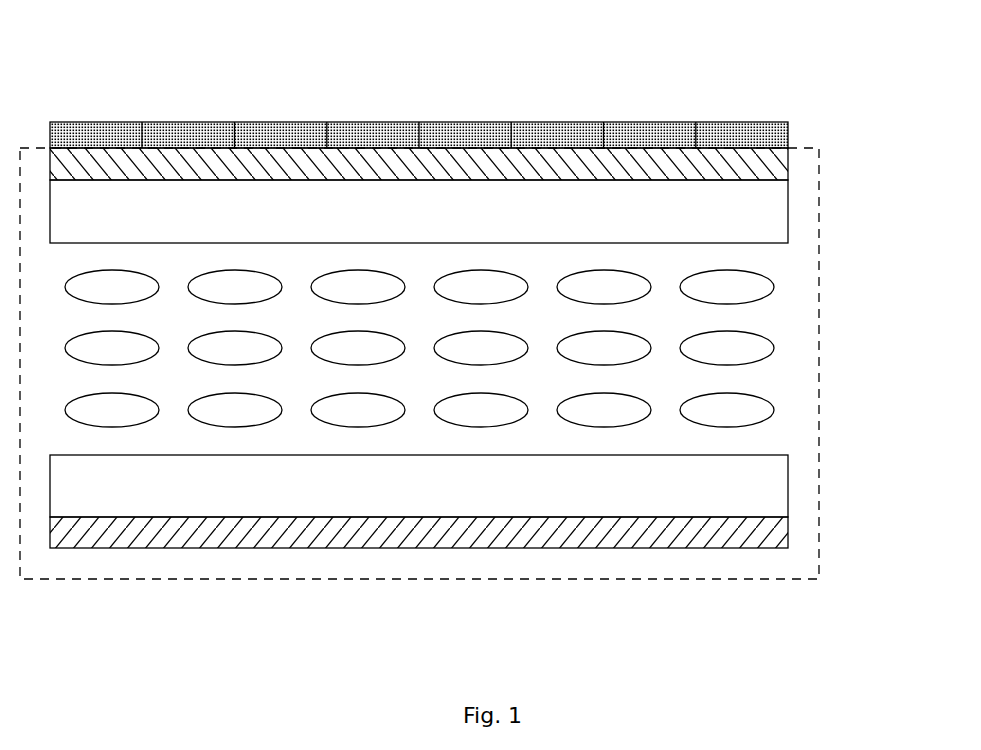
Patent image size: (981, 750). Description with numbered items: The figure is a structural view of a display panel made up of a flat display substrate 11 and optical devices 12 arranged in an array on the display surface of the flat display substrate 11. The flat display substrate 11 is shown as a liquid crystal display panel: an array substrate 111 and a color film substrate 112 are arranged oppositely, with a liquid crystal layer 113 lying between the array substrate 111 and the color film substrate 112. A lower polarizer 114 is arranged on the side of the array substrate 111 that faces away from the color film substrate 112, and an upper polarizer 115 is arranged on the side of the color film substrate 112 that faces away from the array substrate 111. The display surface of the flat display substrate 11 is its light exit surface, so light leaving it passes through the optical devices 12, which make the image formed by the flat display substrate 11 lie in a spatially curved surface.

The flat display substrate 11 is at (682, 579).
The optical devices 12 is at (173, 122).
The array substrate 111 is at (130, 503).
The color film substrate 112 is at (615, 197).
The liquid crystal layer 113 is at (805, 363).
The lower polarizer 114 is at (327, 535).
The upper polarizer 115 is at (353, 160).